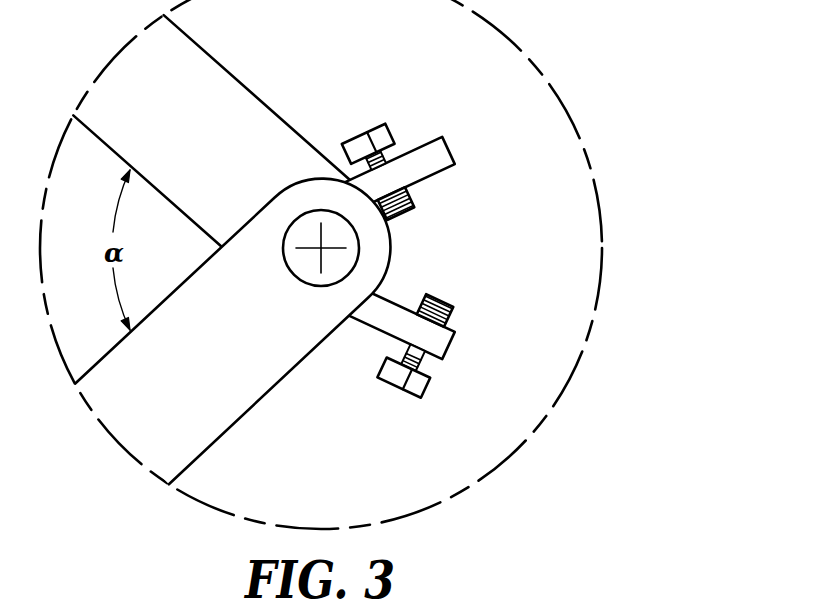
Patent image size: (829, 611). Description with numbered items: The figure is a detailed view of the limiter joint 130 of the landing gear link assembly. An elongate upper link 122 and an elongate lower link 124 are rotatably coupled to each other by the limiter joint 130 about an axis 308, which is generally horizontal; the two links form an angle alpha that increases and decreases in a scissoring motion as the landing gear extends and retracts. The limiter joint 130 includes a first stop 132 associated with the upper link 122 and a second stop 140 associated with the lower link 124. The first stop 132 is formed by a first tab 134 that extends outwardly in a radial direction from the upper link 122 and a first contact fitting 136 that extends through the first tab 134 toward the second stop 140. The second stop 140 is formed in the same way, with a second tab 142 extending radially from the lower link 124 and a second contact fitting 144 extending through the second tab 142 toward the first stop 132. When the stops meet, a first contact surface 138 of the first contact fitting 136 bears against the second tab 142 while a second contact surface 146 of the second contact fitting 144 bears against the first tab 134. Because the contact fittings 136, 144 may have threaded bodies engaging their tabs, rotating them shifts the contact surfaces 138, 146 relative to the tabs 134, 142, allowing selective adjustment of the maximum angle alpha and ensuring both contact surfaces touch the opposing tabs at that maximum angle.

The upper link 122 is at (246, 84).
The lower link 124 is at (257, 406).
The limiter joint 130 is at (307, 252).
The first stop 132 is at (436, 159).
The first tab 134 is at (459, 132).
The first contact fitting 136 is at (360, 127).
The first contact surface 138 is at (412, 218).
The second stop 140 is at (436, 337).
The second tab 142 is at (450, 358).
The second contact fitting 144 is at (405, 396).
The second contact surface 146 is at (446, 305).
The axis 308 is at (323, 258).